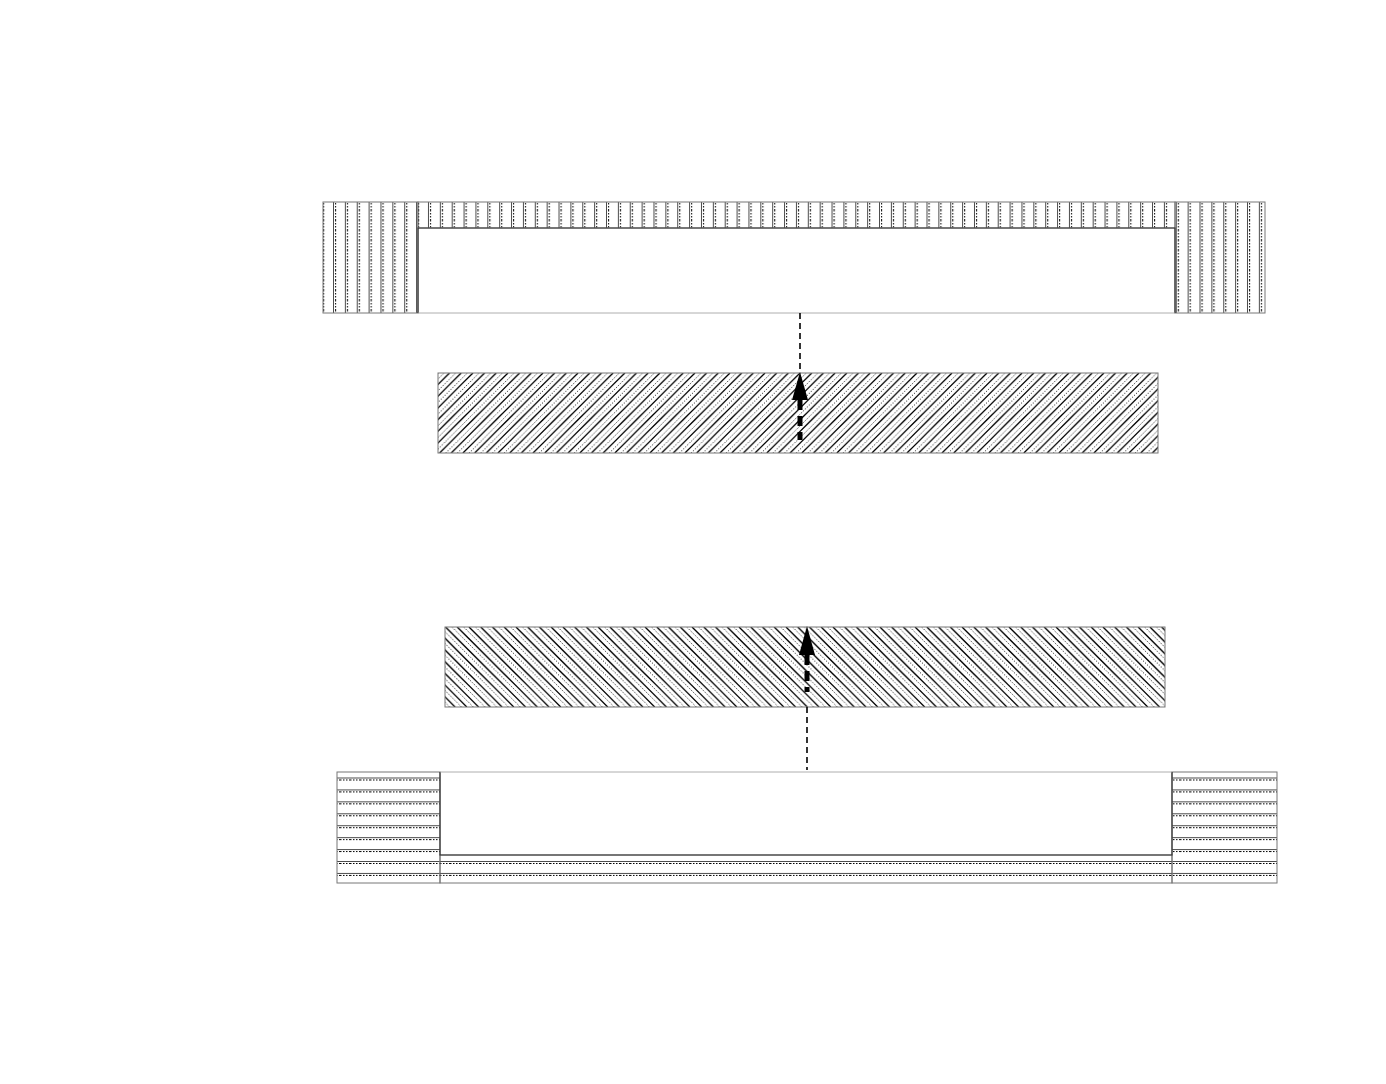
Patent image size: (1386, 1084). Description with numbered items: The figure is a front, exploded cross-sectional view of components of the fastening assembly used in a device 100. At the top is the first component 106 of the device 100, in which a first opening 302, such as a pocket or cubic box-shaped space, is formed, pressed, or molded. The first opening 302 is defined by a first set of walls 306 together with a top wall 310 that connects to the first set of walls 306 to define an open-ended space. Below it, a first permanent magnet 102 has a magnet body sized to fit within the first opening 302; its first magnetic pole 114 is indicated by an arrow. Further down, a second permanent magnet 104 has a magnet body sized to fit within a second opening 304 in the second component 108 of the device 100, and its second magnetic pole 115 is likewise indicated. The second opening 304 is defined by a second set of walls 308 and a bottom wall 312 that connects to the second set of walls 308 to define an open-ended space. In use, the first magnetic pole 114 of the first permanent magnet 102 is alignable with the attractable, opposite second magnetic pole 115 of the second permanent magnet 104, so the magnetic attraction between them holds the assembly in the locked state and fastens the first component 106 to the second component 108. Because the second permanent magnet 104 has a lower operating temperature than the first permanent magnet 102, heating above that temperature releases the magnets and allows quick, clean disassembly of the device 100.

The device 100 is at (163, 116).
The first permanent magnet 102 is at (517, 436).
The second permanent magnet 104 is at (485, 666).
The first component 106 is at (345, 275).
The second component 108 is at (382, 820).
The first magnetic pole 114 is at (790, 453).
The second magnetic pole 115 is at (813, 631).
The first opening 302 is at (796, 270).
The second opening 304 is at (806, 813).
The first set of walls 306 is at (1175, 273).
The second set of walls 308 is at (1170, 811).
The top wall 310 is at (1060, 228).
The bottom wall 312 is at (1037, 855).